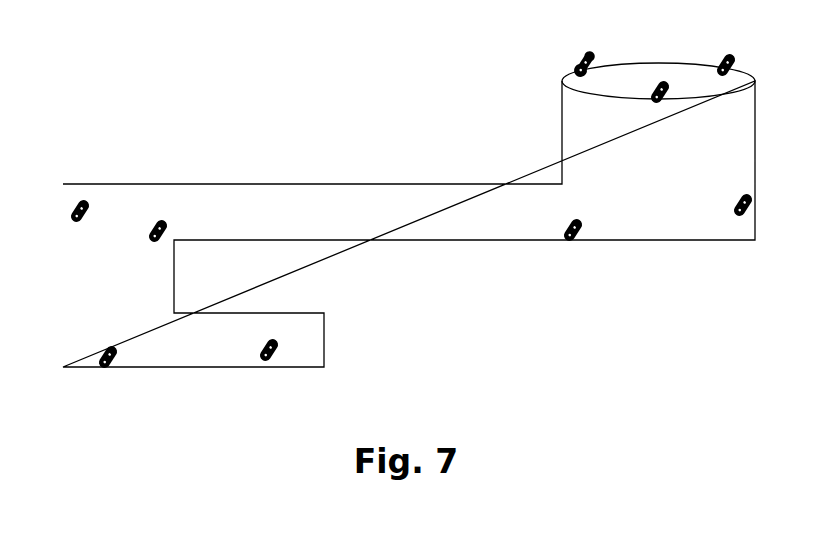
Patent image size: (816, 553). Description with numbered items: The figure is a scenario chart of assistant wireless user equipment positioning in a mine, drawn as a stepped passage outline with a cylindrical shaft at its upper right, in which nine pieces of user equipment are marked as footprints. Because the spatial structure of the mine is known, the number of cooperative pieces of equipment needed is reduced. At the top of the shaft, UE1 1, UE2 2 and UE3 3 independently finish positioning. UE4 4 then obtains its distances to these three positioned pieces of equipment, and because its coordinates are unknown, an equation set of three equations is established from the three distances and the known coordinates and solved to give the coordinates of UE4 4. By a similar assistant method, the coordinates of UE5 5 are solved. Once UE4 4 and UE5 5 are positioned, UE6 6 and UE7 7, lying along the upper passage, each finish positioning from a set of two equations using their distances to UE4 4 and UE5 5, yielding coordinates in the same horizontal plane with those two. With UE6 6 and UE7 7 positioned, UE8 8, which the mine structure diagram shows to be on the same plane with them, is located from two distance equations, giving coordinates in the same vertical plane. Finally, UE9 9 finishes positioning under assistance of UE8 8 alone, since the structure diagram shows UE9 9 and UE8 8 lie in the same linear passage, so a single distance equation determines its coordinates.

The UE1 1 is at (584, 50).
The UE2 2 is at (726, 49).
The UE3 3 is at (657, 105).
The UE4 4 is at (729, 199).
The UE5 5 is at (583, 216).
The UE6 6 is at (188, 228).
The UE7 7 is at (89, 207).
The UE8 8 is at (101, 349).
The UE9 9 is at (283, 352).